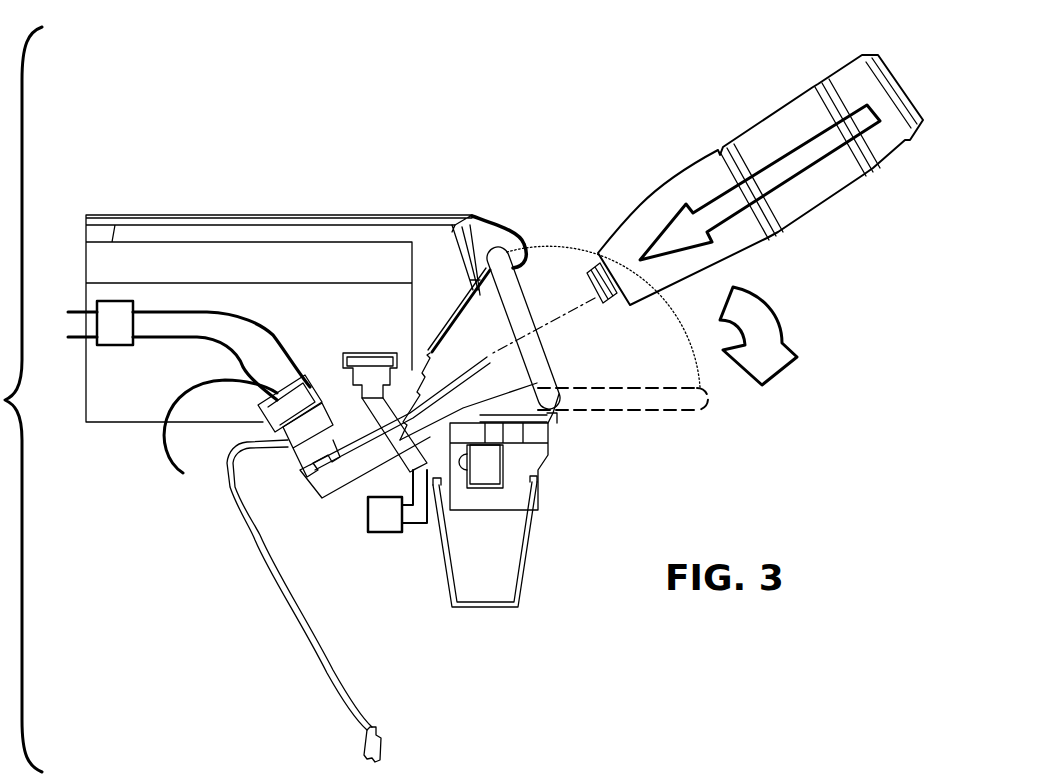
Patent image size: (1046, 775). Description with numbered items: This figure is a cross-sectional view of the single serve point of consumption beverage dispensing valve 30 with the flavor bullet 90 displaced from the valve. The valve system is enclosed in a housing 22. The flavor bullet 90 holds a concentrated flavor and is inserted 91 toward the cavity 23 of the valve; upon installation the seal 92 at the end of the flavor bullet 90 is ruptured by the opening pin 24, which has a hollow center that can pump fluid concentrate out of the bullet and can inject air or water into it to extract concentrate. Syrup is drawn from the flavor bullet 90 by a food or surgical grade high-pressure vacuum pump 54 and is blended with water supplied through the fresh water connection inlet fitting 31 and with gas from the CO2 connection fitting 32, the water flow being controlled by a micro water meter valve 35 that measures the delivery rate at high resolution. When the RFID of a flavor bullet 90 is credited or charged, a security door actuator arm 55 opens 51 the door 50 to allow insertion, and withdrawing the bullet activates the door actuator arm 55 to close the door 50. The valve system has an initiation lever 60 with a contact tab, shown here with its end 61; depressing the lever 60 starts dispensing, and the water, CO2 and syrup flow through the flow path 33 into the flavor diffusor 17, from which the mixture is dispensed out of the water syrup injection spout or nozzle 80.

The flavor diffusor 17 is at (503, 472).
The housing 22 is at (249, 218).
The cavity 23 is at (507, 373).
The opening pin 24 is at (483, 353).
The beverage dispensing valve 30 is at (462, 137).
The fresh water connection inlet fitting 31 is at (221, 397).
The CO2 connection fitting 32 is at (368, 353).
The flow path 33 is at (370, 437).
The micro water meter valve 35 is at (108, 300).
The door 50 is at (703, 397).
The opening of the door 51 is at (778, 320).
The high-pressure vacuum pump 54 is at (385, 532).
The security door actuator arm 55 is at (548, 395).
The initiation lever 60 is at (265, 553).
The tube end 61 is at (378, 740).
The nozzle 80 is at (443, 570).
The flavor bullet 90 is at (807, 215).
The insertion of the flavor bullet 91 is at (797, 150).
The seal 92 is at (587, 287).